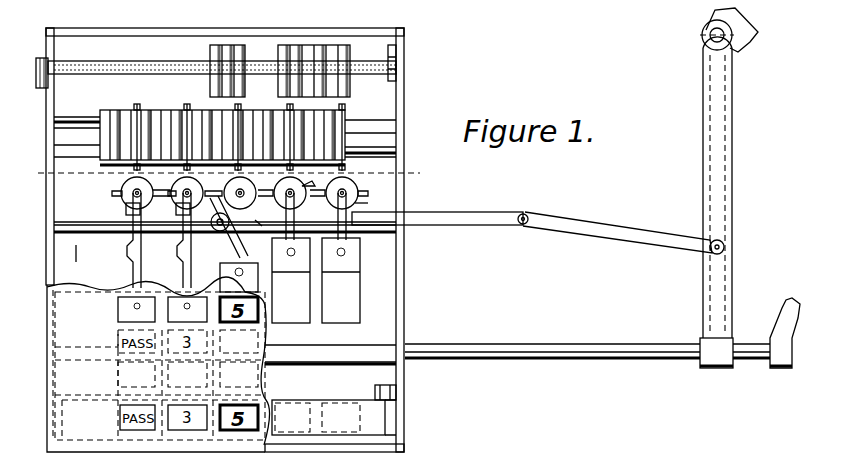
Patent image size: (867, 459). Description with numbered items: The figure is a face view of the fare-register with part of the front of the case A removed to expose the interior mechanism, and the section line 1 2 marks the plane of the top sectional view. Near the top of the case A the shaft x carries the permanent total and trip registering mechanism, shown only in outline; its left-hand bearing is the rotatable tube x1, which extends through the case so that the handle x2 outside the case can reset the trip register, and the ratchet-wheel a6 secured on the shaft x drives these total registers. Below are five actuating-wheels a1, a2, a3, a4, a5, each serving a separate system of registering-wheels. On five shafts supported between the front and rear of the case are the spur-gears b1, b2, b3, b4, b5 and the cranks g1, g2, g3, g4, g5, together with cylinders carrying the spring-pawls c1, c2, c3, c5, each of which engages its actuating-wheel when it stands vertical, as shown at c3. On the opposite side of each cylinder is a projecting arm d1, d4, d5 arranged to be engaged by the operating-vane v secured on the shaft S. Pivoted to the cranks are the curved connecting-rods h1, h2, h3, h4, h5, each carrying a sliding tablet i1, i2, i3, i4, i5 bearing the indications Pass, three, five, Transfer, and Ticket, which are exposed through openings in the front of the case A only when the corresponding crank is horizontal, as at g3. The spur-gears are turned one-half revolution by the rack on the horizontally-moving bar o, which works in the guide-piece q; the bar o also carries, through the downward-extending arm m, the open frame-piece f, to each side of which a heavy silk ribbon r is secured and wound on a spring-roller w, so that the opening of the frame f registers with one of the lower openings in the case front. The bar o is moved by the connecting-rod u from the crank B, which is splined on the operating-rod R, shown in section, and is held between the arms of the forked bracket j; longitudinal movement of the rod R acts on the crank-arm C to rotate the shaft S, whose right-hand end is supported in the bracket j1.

The case A is at (405, 98).
The section line 1 is at (223, 173).
The section line 2 is at (429, 173).
The shaft x is at (272, 66).
The rotatable tube x1 is at (150, 62).
The handle x2 is at (34, 82).
The actuating-wheel a1 is at (140, 99).
The actuating-wheel a2 is at (187, 104).
The actuating-wheel a3 is at (240, 104).
The actuating-wheel a4 is at (292, 104).
The actuating-wheel a5 is at (344, 104).
The ratchet-wheel a6 is at (390, 50).
The spur-gear b1 is at (125, 186).
The spur-gear b2 is at (175, 186).
The spur-gear b3 is at (227, 186).
The spur-gear b4 is at (278, 186).
The spur-gear b5 is at (352, 180).
The spring-pawl c1 is at (112, 193).
The spring-pawl c2 is at (172, 203).
The spring-pawl c3 is at (222, 176).
The spring-pawl c5 is at (368, 193).
The projecting arm d1 is at (158, 205).
The projecting arm d4 is at (269, 184).
The projecting arm d5 is at (320, 183).
The crank g1 is at (126, 210).
The crank g2 is at (176, 224).
The crank g3 is at (265, 234).
The crank g4 is at (312, 175).
The crank g5 is at (373, 207).
The curved connecting-rod h1 is at (127, 253).
The curved connecting-rod h2 is at (183, 270).
The curved connecting-rod h3 is at (228, 244).
The curved connecting-rod h4 is at (300, 238).
The curved connecting-rod h5 is at (350, 238).
The sliding tablet i1 is at (118, 310).
The sliding tablet i2 is at (187, 374).
The sliding tablet i3 is at (220, 276).
The sliding tablet i4 is at (291, 280).
The sliding tablet i5 is at (341, 280).
The operating-vane v is at (377, 293).
The guide-piece q is at (73, 253).
The spring-roller w is at (62, 392).
The downward-extending arm m is at (262, 382).
The open frame-piece f is at (275, 410).
The silk ribbon r is at (318, 400).
The bar o is at (470, 212).
The connecting-rod u is at (620, 228).
The crank B is at (712, 93).
The operating-rod R is at (700, 37).
The forked bracket j is at (758, 34).
The crank-arm C is at (708, 288).
The shaft S is at (588, 344).
The bracket j1 is at (784, 300).